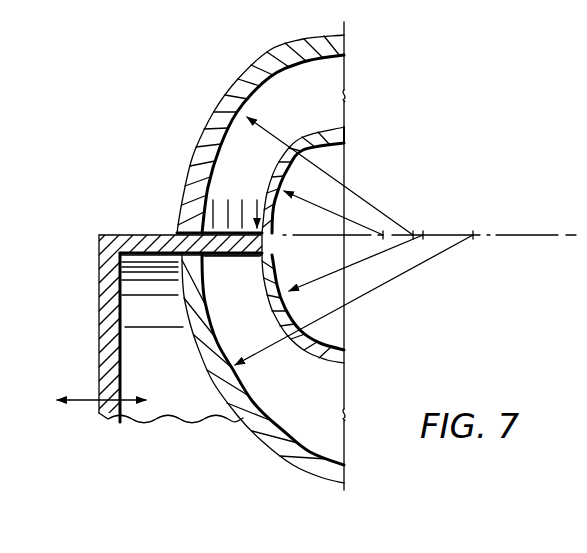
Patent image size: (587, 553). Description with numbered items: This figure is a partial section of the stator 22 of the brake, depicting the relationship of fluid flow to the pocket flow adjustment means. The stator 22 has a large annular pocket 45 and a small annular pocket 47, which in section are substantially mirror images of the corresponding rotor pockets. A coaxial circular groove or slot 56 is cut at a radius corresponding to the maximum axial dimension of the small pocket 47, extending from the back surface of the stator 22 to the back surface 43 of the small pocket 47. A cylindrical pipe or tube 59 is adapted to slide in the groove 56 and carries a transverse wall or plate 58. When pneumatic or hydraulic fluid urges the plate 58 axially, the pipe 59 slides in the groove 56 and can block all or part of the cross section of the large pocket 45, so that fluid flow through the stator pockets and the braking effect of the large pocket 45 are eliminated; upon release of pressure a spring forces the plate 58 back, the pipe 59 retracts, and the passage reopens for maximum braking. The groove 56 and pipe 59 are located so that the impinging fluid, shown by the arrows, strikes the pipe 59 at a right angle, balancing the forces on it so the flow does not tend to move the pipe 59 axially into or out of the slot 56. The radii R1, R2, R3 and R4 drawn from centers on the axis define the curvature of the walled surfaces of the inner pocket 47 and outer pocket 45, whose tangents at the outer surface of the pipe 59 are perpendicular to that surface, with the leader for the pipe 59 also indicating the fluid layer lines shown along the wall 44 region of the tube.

The stator 22 is at (245, 259).
The back surface of the small pocket 43 is at (278, 321).
The inner tube upper wall 44 is at (278, 212).
The large annular pocket 45 is at (265, 88).
The small annular pocket 47 is at (345, 134).
The circular groove 56 is at (230, 258).
The transverse wall 58 is at (108, 360).
The cylindrical pipe 59 is at (150, 255).
The radius R1 is at (362, 198).
The radius R2 is at (330, 210).
The radius R3 is at (330, 275).
The radius R4 is at (370, 291).